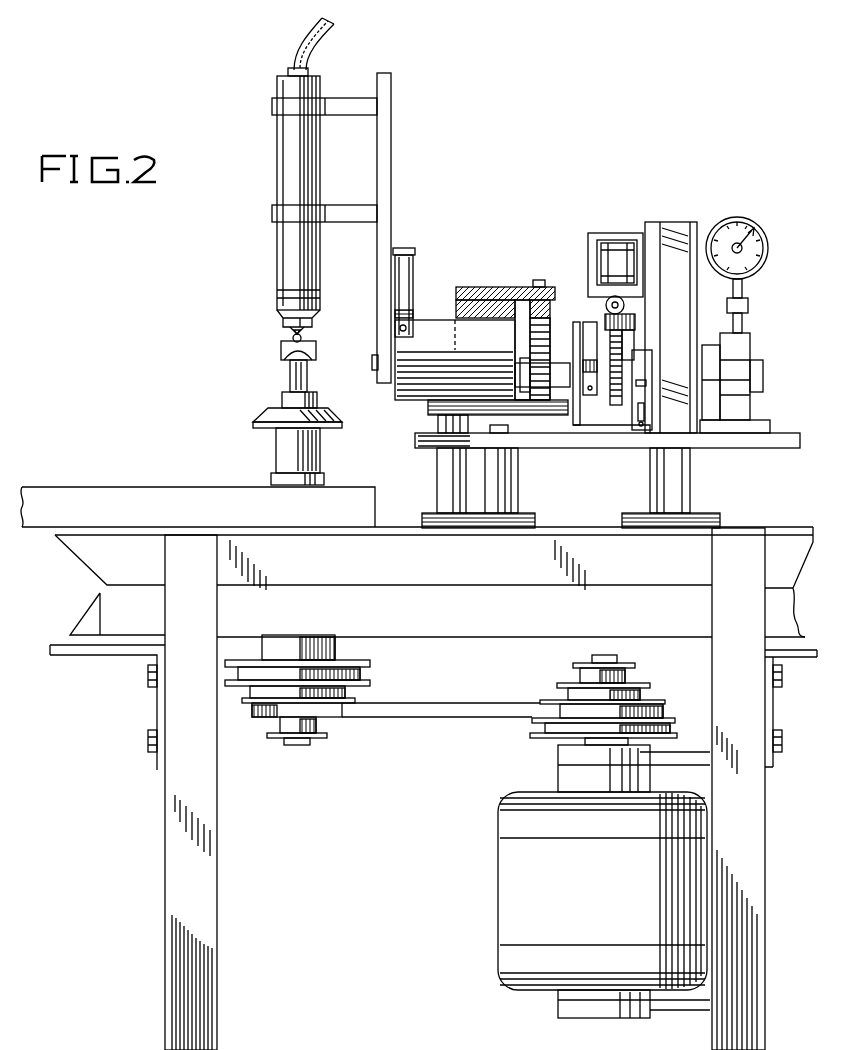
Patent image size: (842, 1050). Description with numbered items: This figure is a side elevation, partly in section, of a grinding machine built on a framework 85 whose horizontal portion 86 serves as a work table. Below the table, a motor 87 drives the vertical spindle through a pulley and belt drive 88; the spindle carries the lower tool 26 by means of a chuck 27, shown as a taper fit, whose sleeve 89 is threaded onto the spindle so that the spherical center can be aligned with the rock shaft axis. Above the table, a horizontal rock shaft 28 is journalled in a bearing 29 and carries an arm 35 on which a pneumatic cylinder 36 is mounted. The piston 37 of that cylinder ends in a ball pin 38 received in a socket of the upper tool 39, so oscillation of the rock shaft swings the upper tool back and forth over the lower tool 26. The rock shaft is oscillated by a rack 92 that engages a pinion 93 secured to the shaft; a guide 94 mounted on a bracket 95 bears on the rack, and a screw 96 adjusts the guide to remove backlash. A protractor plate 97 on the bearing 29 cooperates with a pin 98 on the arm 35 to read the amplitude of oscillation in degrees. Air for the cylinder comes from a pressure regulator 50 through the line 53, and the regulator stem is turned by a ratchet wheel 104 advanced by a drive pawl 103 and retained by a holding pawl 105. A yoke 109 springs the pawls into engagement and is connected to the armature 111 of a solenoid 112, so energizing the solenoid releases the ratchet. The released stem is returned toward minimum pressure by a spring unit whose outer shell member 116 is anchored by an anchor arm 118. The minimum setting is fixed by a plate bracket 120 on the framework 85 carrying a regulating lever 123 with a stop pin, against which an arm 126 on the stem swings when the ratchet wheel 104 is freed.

The lower tool 26 is at (290, 378).
The chuck 27 is at (284, 446).
The rock shaft 28 is at (373, 360).
The bearing 29 is at (410, 396).
The arm 35 is at (392, 130).
The pneumatic cylinder 36 is at (278, 138).
The piston 37 is at (292, 332).
The ball pin 38 is at (292, 339).
The upper tool 39 is at (281, 350).
The pressure regulator 50 is at (672, 362).
The line 53 is at (308, 38).
The framework 85 is at (560, 528).
The horizontal portion 86 is at (85, 487).
The motor 87 is at (506, 900).
The pulley and belt drive 88 is at (447, 727).
The sleeve 89 is at (266, 416).
The rack 92 is at (536, 300).
The pinion 93 is at (546, 400).
The guide 94 is at (462, 287).
The bracket 95 is at (456, 300).
The screw 96 is at (540, 280).
The protractor plate 97 is at (413, 256).
The pin 98 is at (402, 248).
The drive pawl 103 is at (634, 340).
The ratchet wheel 104 is at (616, 400).
The holding pawl 105 is at (622, 345).
The yoke 109 is at (628, 322).
The armature 111 is at (624, 305).
The solenoid 112 is at (598, 236).
The outer shell member 116 is at (642, 368).
The anchor arm 118 is at (643, 418).
The plate bracket 120 is at (607, 439).
The regulating lever 123 is at (578, 322).
The arm 126 is at (588, 425).